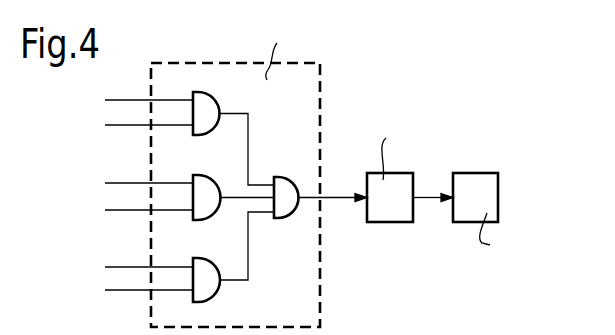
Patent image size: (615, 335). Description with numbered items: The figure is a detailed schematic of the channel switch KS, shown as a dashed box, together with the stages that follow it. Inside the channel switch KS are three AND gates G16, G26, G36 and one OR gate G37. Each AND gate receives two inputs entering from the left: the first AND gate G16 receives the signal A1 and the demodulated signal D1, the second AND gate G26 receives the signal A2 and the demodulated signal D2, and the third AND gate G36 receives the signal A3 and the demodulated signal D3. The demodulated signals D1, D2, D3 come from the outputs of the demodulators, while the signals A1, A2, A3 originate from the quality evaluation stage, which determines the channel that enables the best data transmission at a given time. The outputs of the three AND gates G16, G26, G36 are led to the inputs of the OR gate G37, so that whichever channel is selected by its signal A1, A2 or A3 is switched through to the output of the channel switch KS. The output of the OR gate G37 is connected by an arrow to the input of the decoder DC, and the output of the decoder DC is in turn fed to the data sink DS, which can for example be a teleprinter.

The channel switch KS is at (322, 93).
The AND gate G16 is at (223, 103).
The AND gate G26 is at (222, 180).
The AND gate G36 is at (222, 261).
The OR gate G37 is at (302, 178).
The decoder DC is at (416, 175).
The data sink DS is at (519, 213).
The signal A1 is at (136, 97).
The demodulated signal D1 is at (136, 123).
The signal A2 is at (136, 183).
The demodulated signal D2 is at (136, 209).
The signal A3 is at (136, 267).
The demodulated signal D3 is at (136, 290).